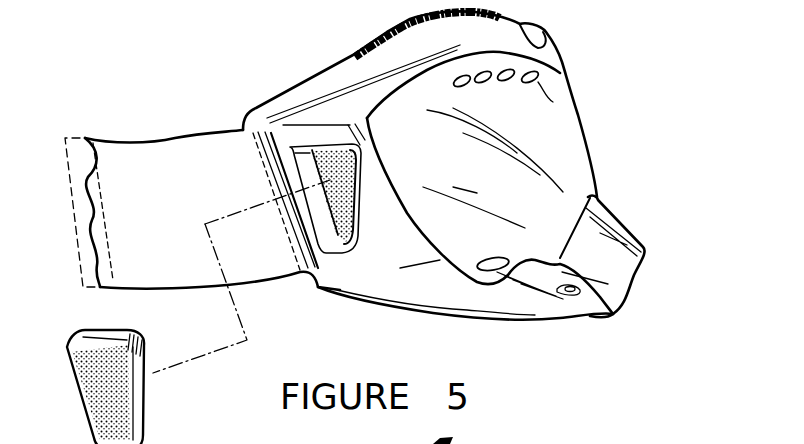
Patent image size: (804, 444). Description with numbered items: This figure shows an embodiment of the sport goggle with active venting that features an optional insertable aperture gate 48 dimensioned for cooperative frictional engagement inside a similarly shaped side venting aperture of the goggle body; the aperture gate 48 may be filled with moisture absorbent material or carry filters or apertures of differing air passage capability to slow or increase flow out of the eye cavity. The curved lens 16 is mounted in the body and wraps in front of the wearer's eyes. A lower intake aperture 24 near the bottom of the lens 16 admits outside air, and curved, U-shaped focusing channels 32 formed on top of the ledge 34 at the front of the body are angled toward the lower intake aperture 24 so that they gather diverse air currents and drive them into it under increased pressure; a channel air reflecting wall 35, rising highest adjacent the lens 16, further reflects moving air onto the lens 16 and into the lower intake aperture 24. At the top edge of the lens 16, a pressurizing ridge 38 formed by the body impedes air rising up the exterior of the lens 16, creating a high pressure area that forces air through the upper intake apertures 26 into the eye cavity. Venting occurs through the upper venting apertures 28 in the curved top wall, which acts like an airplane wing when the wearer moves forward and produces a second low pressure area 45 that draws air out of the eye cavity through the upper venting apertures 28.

The lens 16 is at (448, 177).
The lower intake aperture 24 is at (507, 258).
The upper intake apertures 26 is at (553, 102).
The upper venting apertures 28 is at (373, 37).
The focusing channels 32 is at (595, 298).
The ledge 34 is at (573, 322).
The channel air reflecting wall 35 is at (458, 275).
The pressurizing ridge 38 is at (560, 75).
The second low pressure area 45 is at (473, 13).
The insertable aperture gate 48 is at (120, 400).